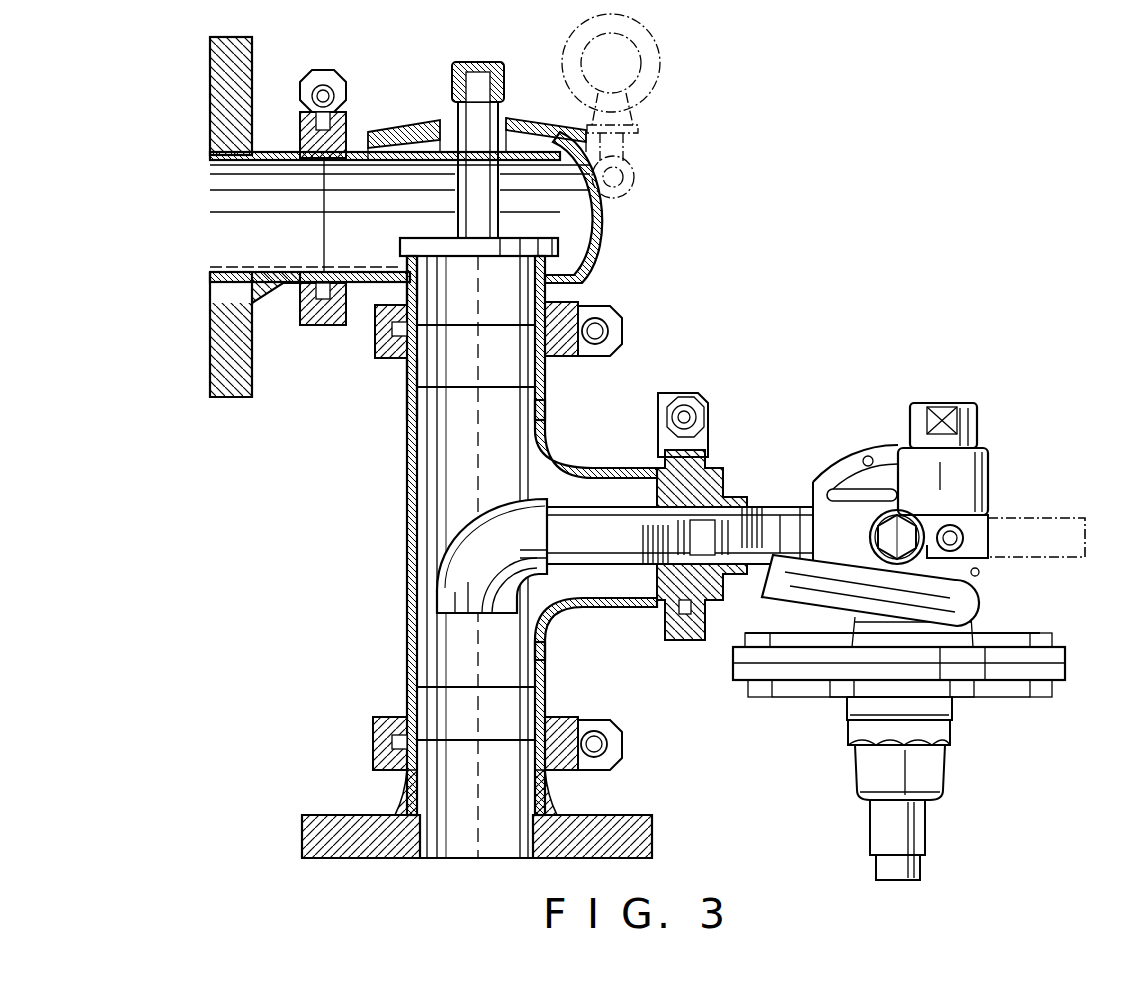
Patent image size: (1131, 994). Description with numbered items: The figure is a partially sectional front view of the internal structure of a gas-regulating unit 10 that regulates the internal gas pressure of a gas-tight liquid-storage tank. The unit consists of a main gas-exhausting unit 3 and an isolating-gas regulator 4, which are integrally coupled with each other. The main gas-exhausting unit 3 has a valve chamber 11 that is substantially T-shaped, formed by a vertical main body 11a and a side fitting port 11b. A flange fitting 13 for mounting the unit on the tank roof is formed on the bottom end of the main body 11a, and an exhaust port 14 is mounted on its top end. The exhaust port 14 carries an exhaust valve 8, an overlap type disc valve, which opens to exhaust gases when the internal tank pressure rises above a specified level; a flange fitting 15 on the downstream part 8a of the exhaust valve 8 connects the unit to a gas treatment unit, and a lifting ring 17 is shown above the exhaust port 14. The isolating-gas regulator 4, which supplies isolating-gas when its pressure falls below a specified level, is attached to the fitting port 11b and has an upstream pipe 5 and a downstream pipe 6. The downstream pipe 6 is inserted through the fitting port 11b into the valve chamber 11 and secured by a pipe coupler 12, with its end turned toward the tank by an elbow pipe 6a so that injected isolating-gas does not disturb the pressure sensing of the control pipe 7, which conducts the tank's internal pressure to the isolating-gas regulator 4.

The main gas-exhausting unit 3 is at (398, 587).
The isolating-gas regulator 4 is at (996, 483).
The upstream pipe 5 is at (1035, 522).
The downstream pipe 6 is at (586, 495).
The elbow pipe 6a is at (446, 546).
The control pipe 7 is at (828, 572).
The exhaust valve 8 is at (530, 242).
The downstream part of the exhaust valve 8a is at (437, 193).
The gas-regulating unit 10 is at (645, 398).
The valve chamber 11 is at (405, 556).
The main body 11a is at (407, 430).
The fitting port 11b is at (588, 608).
The pipe coupler 12 is at (712, 480).
The flange fitting 13 is at (322, 815).
The exhaust port 14 is at (605, 238).
The flange fitting 15 is at (208, 342).
The lifting ring 17 is at (656, 87).